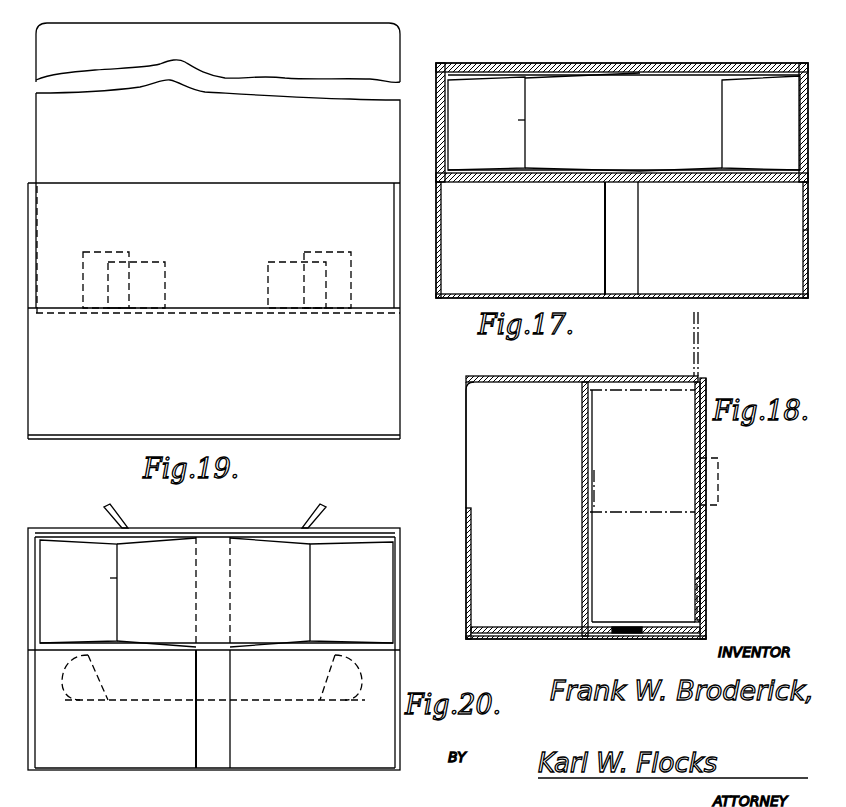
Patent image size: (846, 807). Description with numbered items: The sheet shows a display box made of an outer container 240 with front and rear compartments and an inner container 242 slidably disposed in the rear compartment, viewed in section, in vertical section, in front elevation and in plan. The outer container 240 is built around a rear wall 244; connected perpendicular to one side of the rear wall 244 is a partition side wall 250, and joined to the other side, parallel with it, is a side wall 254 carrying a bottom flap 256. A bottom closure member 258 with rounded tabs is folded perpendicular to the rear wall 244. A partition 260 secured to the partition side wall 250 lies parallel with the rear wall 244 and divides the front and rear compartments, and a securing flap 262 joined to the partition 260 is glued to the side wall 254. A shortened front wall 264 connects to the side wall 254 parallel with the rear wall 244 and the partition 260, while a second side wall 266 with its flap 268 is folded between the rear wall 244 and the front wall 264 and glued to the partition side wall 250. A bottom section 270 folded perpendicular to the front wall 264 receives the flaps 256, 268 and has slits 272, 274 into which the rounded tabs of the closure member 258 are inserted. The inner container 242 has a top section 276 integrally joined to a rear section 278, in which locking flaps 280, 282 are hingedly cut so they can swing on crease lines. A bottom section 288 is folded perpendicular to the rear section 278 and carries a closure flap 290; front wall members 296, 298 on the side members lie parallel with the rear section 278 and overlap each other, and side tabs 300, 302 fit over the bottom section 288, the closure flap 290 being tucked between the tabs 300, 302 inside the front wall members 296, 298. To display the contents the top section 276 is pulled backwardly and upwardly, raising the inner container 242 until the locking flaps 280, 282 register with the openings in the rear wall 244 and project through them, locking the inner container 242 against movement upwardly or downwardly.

In FIG. 17, the outer container 240 is at (717, 266).
In FIG. 18, the outer container 240 is at (488, 487).
In FIG. 20, the outer container 240 is at (184, 752).
In FIG. 17, the inner container 242 is at (681, 86).
In FIG. 18, the inner container 242 is at (672, 562).
In FIG. 20, the inner container 242 is at (154, 548).
In FIG. 17, the rear wall 244 is at (629, 68).
In FIG. 18, the rear wall 244 is at (706, 549).
In FIG. 20, the rear wall 244 is at (225, 531).
In FIG. 19, the partition side wall 250 is at (38, 215).
In FIG. 17, the partition side wall 250 is at (447, 124).
In FIG. 20, the partition side wall 250 is at (38, 559).
In FIG. 19, the side wall 254 is at (404, 284).
In FIG. 17, the side wall 254 is at (803, 265).
In FIG. 20, the side wall 254 is at (398, 718).
In FIG. 17, the bottom flap 256 is at (567, 262).
In FIG. 20, the bottom flap 256 is at (156, 747).
In FIG. 18, the bottom closure member 258 is at (620, 637).
In FIG. 20, the bottom closure member 258 is at (182, 687).
In FIG. 19, the partition 260 is at (246, 194).
In FIG. 17, the partition 260 is at (566, 188).
In FIG. 18, the partition 260 is at (582, 551).
In FIG. 20, the partition 260 is at (237, 655).
In FIG. 17, the securing flap 262 is at (803, 208).
In FIG. 20, the securing flap 262 is at (391, 681).
In FIG. 19, the shortened front wall 264 is at (233, 378).
In FIG. 17, the shortened front wall 264 is at (663, 302).
In FIG. 18, the shortened front wall 264 is at (466, 577).
In FIG. 20, the shortened front wall 264 is at (240, 775).
In FIG. 19, the second side wall 266 is at (28, 188).
In FIG. 17, the second side wall 266 is at (441, 233).
In FIG. 18, the second side wall 266 is at (472, 458).
In FIG. 20, the second side wall 266 is at (35, 711).
In FIG. 17, the flap 268 is at (713, 254).
In FIG. 20, the flap 268 is at (307, 741).
In FIG. 18, the bottom section 270 is at (487, 636).
In FIG. 19, the slit 272 is at (124, 280).
In FIG. 20, the slit 272 is at (95, 673).
In FIG. 19, the slit 274 is at (309, 280).
In FIG. 20, the slit 274 is at (326, 672).
In FIG. 19, the top section 276 is at (218, 53).
In FIG. 18, the top section 276 is at (582, 378).
In FIG. 17, the rear section 278 is at (612, 81).
In FIG. 18, the rear section 278 is at (690, 412).
In FIG. 20, the rear section 278 is at (245, 541).
In FIG. 17, the locking flap 280 is at (506, 70).
In FIG. 18, the locking flap 280 is at (718, 475).
In FIG. 20, the locking flap 280 is at (104, 508).
In FIG. 17, the locking flap 282 is at (734, 68).
In FIG. 20, the locking flap 282 is at (326, 513).
In FIG. 17, the bottom section 288 is at (646, 135).
In FIG. 18, the bottom section 288 is at (640, 625).
In FIG. 17, the closure flap 290 is at (620, 172).
In FIG. 20, the closure flap 290 is at (252, 641).
In FIG. 17, the front wall member 296 is at (560, 173).
In FIG. 20, the front wall member 296 is at (178, 643).
In FIG. 17, the front wall member 298 is at (672, 172).
In FIG. 18, the front wall member 298 is at (588, 533).
In FIG. 20, the front wall member 298 is at (262, 649).
In FIG. 17, the side tab 300 is at (525, 119).
In FIG. 20, the side tab 300 is at (105, 579).
In FIG. 17, the side tab 302 is at (734, 94).
In FIG. 20, the side tab 302 is at (318, 582).